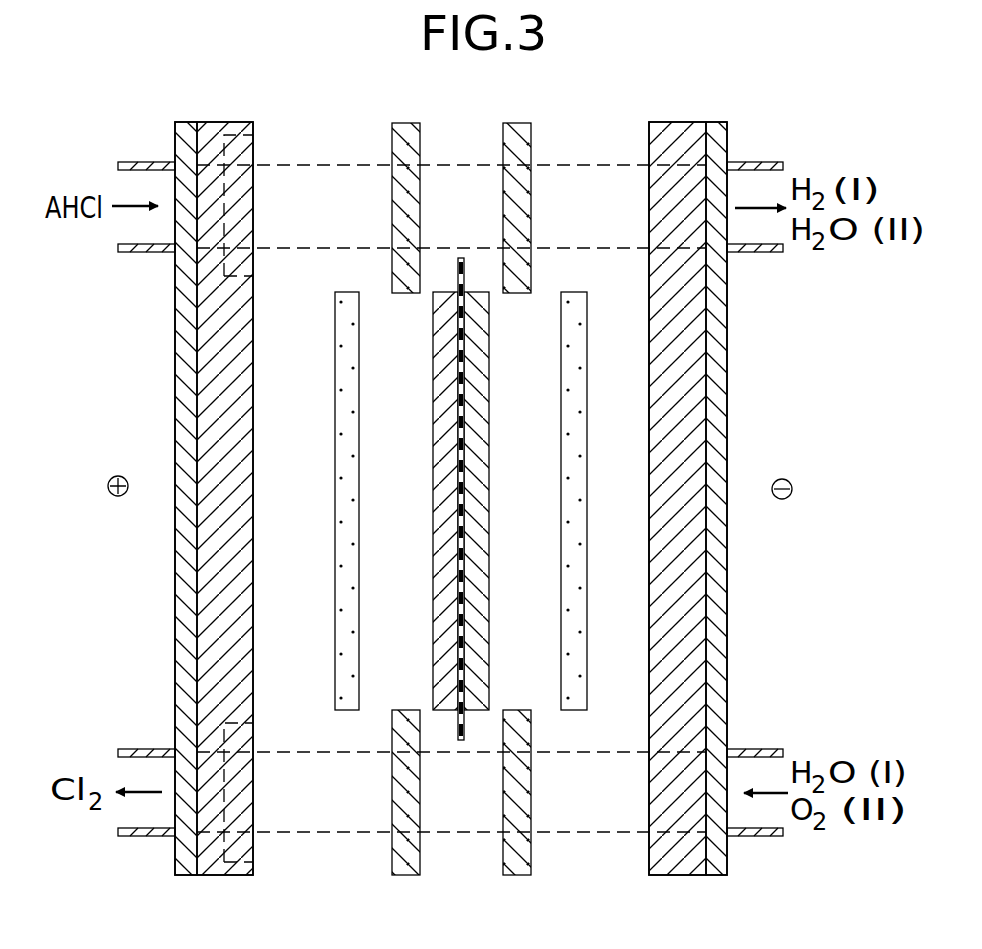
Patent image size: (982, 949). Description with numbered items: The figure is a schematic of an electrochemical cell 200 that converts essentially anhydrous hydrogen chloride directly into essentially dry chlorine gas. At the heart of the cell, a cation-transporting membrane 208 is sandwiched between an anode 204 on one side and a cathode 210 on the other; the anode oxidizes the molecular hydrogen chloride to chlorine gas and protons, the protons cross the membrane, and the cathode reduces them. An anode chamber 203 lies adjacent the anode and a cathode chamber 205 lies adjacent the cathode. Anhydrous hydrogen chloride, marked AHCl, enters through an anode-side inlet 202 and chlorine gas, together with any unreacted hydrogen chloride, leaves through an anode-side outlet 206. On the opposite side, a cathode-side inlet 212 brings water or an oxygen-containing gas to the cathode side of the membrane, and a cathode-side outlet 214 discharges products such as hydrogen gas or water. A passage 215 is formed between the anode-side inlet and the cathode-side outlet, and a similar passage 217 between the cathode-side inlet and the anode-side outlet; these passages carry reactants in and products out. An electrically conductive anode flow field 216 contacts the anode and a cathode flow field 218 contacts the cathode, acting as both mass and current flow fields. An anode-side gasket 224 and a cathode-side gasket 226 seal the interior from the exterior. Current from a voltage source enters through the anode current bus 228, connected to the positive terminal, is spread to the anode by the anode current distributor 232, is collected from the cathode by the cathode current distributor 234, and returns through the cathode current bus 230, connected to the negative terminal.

The electrochemical cell 200 is at (233, 70).
The anode-side inlet 202 is at (158, 162).
The anode chamber 203 is at (377, 703).
The anode 204 is at (445, 448).
The cathode chamber 205 is at (543, 705).
The anode-side outlet 206 is at (153, 749).
The membrane 208 is at (462, 742).
The cathode 210 is at (482, 448).
The cathode-side inlet 212 is at (750, 749).
The cathode-side outlet 214 is at (767, 162).
The passage 215 is at (270, 165).
The anode flow field 216 is at (350, 568).
The passage 217 is at (283, 832).
The cathode flow field 218 is at (575, 558).
The anode-side gasket 224 is at (410, 123).
The cathode-side gasket 226 is at (523, 123).
The anode current bus 228 is at (182, 875).
The cathode current bus 230 is at (717, 875).
The anode current distributor 232 is at (210, 875).
The cathode current distributor 234 is at (683, 875).